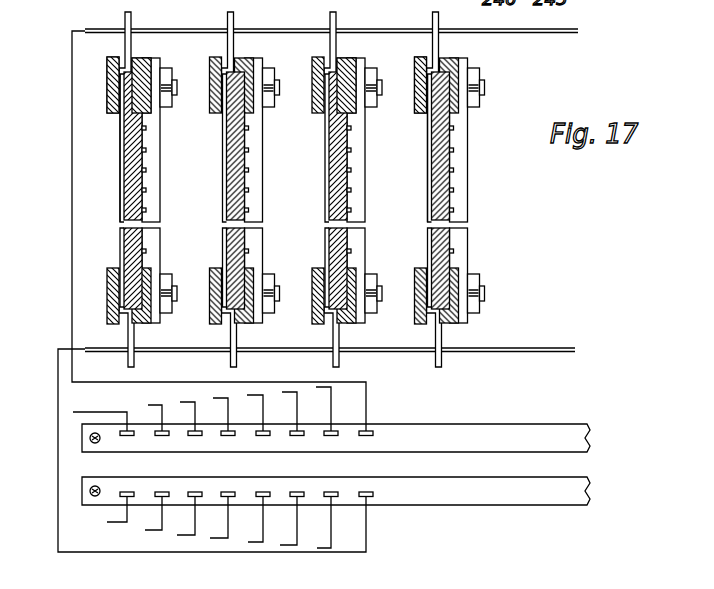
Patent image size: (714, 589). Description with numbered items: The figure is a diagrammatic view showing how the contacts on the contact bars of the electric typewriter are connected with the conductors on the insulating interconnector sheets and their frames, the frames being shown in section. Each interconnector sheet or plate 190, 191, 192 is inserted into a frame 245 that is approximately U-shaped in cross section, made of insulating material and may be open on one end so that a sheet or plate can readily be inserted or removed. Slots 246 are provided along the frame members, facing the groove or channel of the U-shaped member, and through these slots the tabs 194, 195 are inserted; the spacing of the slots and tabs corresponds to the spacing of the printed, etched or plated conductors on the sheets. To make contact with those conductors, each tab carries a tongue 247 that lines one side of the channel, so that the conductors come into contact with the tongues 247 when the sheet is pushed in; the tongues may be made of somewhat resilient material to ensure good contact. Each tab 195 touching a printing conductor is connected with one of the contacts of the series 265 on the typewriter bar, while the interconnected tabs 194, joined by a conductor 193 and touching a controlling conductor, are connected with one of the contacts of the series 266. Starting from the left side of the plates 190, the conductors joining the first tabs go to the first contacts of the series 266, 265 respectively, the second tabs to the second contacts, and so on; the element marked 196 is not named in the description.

The interconnector sheet or plate 190 is at (127, 173).
The interconnector sheet or plate 191 is at (229, 173).
The interconnector sheet or plate 192 is at (331, 173).
The conductor 193 is at (437, 167).
The tab 194 is at (117, 365).
The tab 195 is at (133, 20).
The bus bar 196 is at (273, 30).
The frame 245 is at (108, 90).
The slot 246 is at (134, 62).
The tongue 247 is at (110, 80).
The contact 265 is at (128, 500).
The contact 266 is at (127, 437).